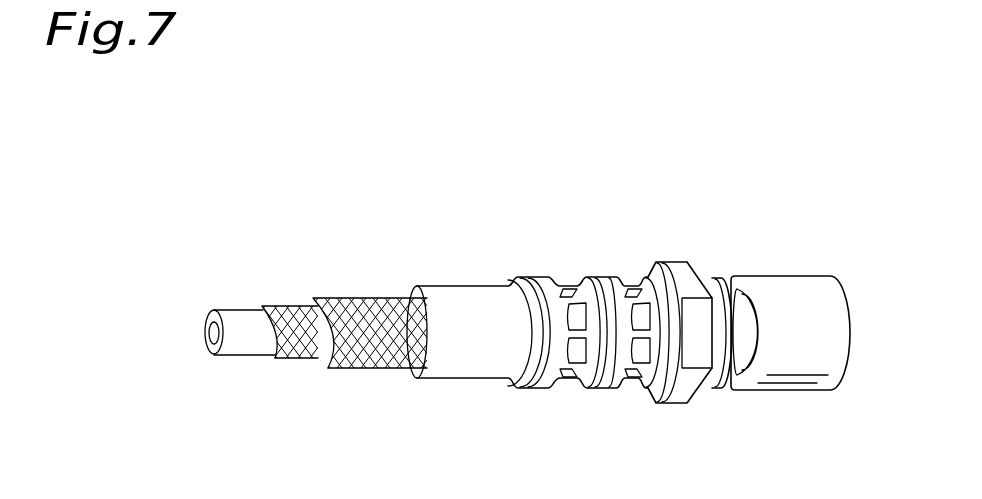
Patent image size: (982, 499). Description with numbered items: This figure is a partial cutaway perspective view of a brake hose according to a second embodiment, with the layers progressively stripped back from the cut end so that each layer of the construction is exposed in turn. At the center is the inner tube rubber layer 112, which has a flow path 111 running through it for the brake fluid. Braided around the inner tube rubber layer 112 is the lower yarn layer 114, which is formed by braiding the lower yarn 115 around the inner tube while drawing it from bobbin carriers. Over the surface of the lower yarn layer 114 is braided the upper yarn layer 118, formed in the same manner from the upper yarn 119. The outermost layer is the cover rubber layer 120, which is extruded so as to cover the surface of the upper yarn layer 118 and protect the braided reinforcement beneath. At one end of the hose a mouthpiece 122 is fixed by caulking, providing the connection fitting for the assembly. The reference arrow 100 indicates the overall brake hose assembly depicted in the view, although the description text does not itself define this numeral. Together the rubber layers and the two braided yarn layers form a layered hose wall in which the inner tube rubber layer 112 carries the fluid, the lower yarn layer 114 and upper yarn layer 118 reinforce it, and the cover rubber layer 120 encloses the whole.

The coaxial connector assembly 100 is at (628, 266).
The flow path 111 is at (203, 335).
The inner tube rubber layer 112 is at (238, 322).
The lower yarn layer 114 is at (293, 313).
The lower yarn 115 is at (303, 353).
The upper yarn layer 118 is at (393, 300).
The upper yarn 119 is at (385, 370).
The cover rubber layer 120 is at (467, 297).
The mouthpiece 122 is at (795, 277).